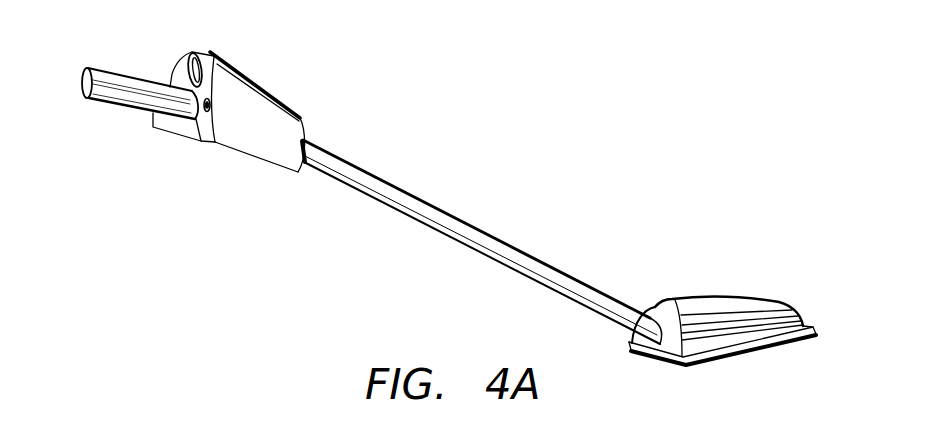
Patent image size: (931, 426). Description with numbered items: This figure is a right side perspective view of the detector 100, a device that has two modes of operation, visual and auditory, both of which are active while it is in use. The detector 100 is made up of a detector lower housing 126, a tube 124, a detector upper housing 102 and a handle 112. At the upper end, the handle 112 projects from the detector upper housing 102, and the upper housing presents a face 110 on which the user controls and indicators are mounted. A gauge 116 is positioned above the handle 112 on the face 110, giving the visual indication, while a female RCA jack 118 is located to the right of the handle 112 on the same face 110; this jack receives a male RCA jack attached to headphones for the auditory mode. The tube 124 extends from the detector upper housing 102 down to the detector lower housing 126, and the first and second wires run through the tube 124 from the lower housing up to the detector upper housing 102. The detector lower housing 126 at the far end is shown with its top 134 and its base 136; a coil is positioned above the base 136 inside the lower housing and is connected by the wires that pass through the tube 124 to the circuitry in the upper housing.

The detector 100 is at (429, 150).
The detector upper housing 102 is at (280, 61).
The face 110 is at (176, 71).
The handle 112 is at (113, 104).
The gauge 116 is at (194, 53).
The female RCA jack 118 is at (204, 114).
The tube 124 is at (481, 231).
The detector lower housing 126 is at (772, 285).
The top 134 is at (717, 297).
The base 136 is at (801, 322).